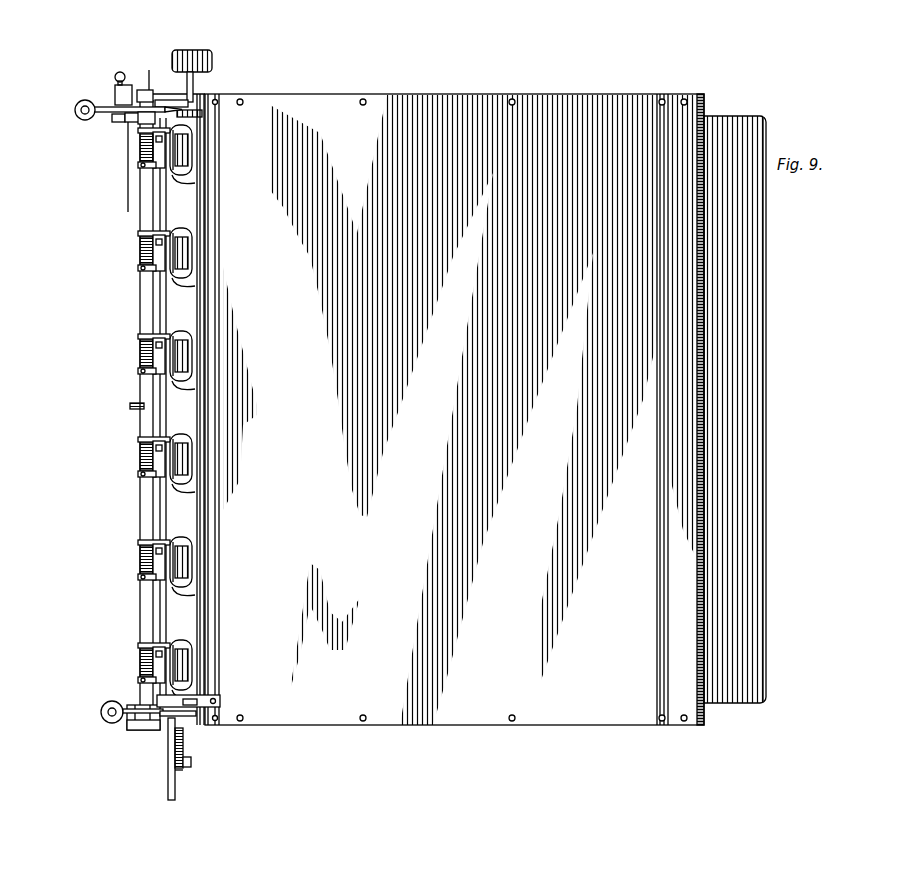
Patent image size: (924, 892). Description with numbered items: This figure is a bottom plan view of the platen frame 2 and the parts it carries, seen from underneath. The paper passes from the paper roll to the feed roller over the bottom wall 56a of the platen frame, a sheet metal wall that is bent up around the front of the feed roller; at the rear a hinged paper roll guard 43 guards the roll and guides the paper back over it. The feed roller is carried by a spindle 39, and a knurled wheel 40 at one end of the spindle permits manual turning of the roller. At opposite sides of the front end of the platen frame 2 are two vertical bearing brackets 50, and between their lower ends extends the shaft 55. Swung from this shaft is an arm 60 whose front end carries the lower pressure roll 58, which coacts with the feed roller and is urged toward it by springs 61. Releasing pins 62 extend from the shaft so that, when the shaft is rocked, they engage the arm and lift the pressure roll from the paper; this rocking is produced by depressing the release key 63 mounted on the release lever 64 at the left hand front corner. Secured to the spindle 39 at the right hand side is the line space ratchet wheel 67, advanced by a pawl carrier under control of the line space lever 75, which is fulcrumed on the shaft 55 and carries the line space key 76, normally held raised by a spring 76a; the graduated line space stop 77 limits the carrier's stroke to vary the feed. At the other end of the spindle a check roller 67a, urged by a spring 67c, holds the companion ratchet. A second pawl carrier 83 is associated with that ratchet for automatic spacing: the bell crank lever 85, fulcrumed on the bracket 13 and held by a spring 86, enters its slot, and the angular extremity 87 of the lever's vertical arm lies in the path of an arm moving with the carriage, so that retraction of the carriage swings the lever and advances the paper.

The platen frame 2 is at (130, 723).
The bracket 13 is at (167, 773).
The spindle 39 is at (195, 88).
The knurled wheel 40 is at (213, 58).
The paper roll guard 43 is at (767, 246).
The vertical bearing brackets 50 is at (149, 88).
The shaft 55 is at (140, 207).
The bottom wall 56a is at (440, 85).
The lower pressure roll 58 is at (190, 155).
The arm 60 is at (188, 175).
The springs 61 is at (147, 150).
The releasing pins 62 is at (140, 134).
The release key 63 is at (100, 712).
The release lever 64 is at (108, 709).
The line space ratchet wheel 67 is at (202, 114).
The check roller 67a is at (197, 700).
The spring 67c is at (208, 702).
The line space lever 75 is at (113, 118).
The line space key 76 is at (76, 107).
The spring 76a is at (126, 119).
The graduated line space stop 77 is at (116, 94).
The pawl carrier 83 is at (193, 713).
The bell crank lever 85 is at (191, 762).
The spring 86 is at (184, 745).
The angular extremity 87 is at (190, 770).